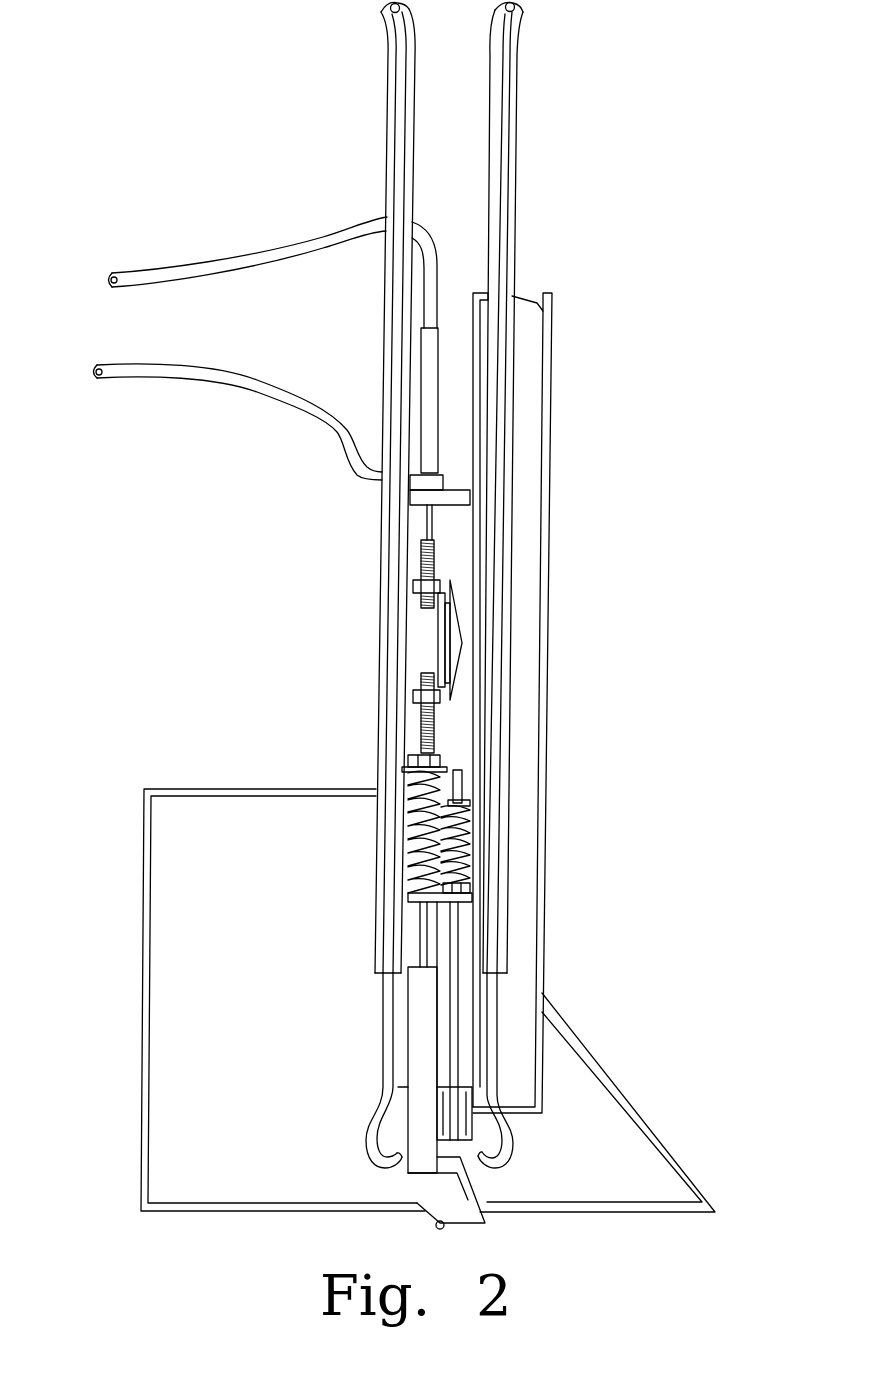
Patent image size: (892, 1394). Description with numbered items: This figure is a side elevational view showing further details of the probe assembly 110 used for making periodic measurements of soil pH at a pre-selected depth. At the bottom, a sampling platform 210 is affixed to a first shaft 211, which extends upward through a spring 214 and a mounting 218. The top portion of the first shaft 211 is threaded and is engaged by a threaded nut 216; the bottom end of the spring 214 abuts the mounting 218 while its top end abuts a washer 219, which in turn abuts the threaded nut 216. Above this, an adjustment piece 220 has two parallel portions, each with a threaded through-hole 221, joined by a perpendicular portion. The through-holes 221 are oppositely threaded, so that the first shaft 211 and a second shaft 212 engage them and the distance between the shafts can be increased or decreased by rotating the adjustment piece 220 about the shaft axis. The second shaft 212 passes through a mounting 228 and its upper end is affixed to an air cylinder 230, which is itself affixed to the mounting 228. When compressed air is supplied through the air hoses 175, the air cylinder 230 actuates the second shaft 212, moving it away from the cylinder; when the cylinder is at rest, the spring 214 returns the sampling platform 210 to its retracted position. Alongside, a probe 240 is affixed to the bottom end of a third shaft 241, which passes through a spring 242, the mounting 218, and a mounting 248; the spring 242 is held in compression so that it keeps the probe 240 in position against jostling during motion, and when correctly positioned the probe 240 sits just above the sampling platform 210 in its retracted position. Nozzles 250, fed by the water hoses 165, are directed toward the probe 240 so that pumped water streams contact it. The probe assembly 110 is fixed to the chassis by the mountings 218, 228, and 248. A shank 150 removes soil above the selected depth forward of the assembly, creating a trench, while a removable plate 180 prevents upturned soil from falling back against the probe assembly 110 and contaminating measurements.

The probe assembly 110 is at (670, 88).
The water hoses 165 is at (390, 77).
The air hoses 175 is at (213, 262).
The air cylinder 230 is at (440, 403).
The mounting 228 is at (462, 507).
The second shaft 212 is at (421, 546).
The threaded through-holes 221 is at (433, 571).
The adjustment piece 220 is at (440, 637).
The threaded nut 216 is at (415, 757).
The washer 219 is at (405, 765).
The spring 214 is at (412, 837).
The mounting 248 is at (467, 785).
The third shaft 241 is at (472, 830).
The spring 242 is at (472, 870).
The mounting 218 is at (407, 903).
The first shaft 211 is at (418, 935).
The probe 240 is at (457, 1008).
The nozzles 250 is at (355, 1142).
The shank 150 is at (583, 1095).
The removable plate 180 is at (225, 965).
The sampling platform 210 is at (434, 1226).